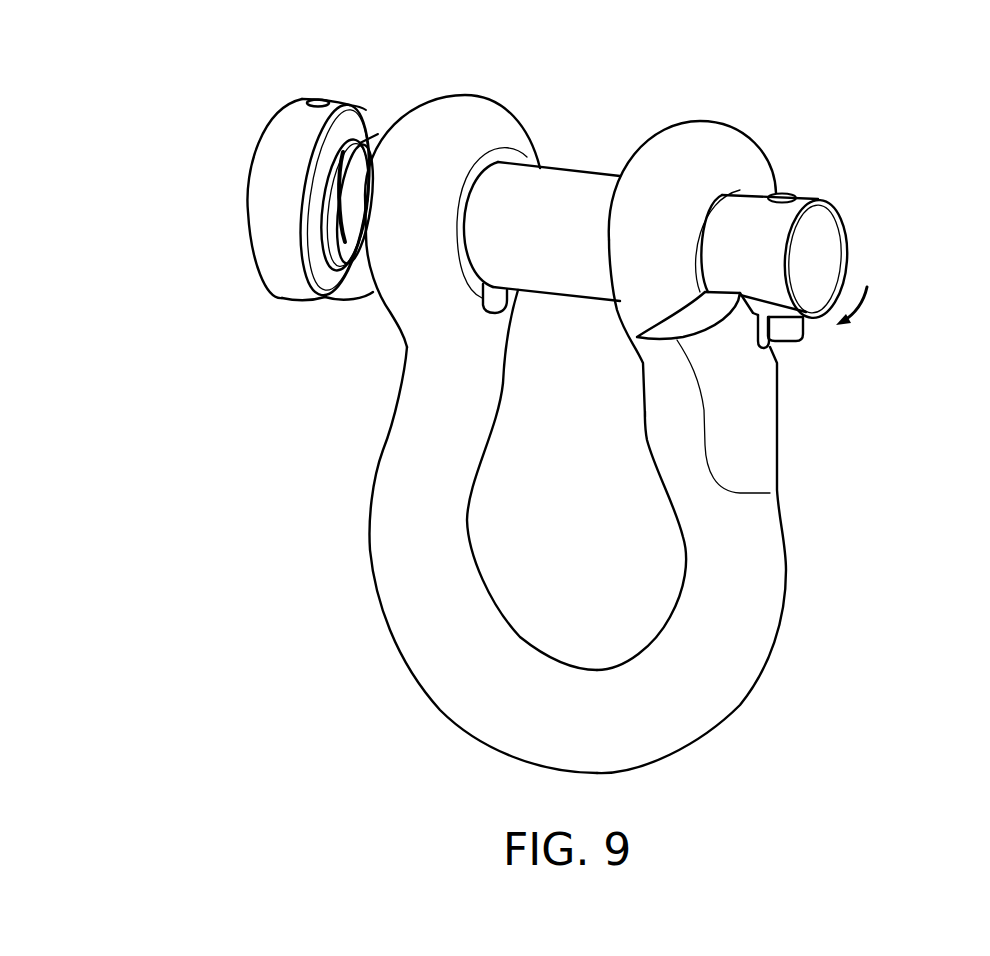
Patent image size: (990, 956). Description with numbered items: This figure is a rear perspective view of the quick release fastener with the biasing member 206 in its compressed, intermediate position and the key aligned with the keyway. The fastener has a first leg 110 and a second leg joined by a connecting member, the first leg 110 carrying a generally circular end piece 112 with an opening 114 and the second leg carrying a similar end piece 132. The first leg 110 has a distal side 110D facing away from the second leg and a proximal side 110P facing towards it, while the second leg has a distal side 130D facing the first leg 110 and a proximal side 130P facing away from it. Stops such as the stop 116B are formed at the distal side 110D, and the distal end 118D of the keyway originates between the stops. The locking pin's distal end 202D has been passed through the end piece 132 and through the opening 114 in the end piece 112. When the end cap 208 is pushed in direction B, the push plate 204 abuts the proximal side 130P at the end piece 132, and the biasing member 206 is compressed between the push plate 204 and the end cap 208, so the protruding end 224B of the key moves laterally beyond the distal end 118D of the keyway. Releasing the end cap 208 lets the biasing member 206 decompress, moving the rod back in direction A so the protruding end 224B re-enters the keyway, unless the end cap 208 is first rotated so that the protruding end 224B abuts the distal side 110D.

The first leg 110 is at (602, 506).
The proximal side of the first leg 110P is at (620, 398).
The distal side of the first leg 110D is at (795, 426).
The proximal side of the second leg 130P is at (398, 358).
The distal side of the second leg 130D is at (514, 360).
The end piece of the second leg 132 is at (476, 101).
The end piece of the first leg 112 is at (716, 137).
The opening 114 is at (740, 196).
The stop 116B is at (672, 318).
The distal end of the keyway 118D is at (778, 348).
The protruding end of the key 224B is at (803, 334).
The distal end of the closure element 202D is at (828, 242).
The push plate 204 is at (385, 140).
The biasing member 206 is at (350, 268).
The end cap 208 is at (285, 135).
The direction A is at (130, 306).
The direction B is at (212, 188).